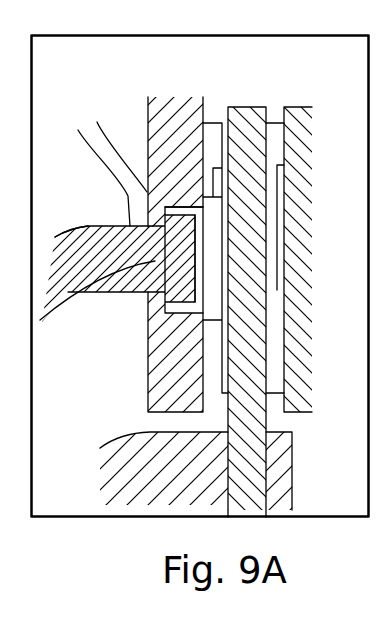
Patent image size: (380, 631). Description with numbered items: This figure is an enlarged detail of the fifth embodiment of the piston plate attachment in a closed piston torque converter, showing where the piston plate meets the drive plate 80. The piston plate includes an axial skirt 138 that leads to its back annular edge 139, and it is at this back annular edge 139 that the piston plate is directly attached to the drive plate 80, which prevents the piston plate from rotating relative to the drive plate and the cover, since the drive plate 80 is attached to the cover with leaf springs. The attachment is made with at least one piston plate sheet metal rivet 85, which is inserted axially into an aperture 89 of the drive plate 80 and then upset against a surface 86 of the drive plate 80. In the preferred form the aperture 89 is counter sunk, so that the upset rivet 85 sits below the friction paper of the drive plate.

The drive plate 80 is at (180, 137).
The piston plate sheet metal rivet 85 is at (198, 247).
The surface of drive plate 86 is at (167, 209).
The aperture of drive plate 89 is at (78, 293).
The axial skirt 138 is at (89, 252).
The back annular edge 139 is at (198, 279).